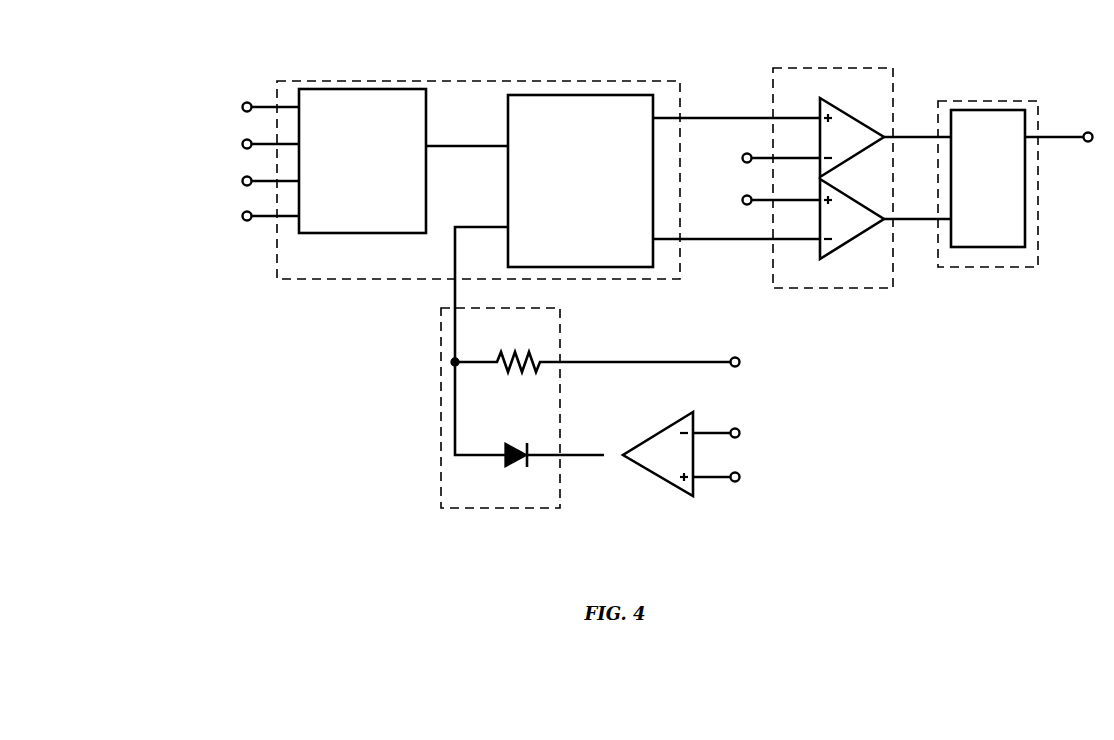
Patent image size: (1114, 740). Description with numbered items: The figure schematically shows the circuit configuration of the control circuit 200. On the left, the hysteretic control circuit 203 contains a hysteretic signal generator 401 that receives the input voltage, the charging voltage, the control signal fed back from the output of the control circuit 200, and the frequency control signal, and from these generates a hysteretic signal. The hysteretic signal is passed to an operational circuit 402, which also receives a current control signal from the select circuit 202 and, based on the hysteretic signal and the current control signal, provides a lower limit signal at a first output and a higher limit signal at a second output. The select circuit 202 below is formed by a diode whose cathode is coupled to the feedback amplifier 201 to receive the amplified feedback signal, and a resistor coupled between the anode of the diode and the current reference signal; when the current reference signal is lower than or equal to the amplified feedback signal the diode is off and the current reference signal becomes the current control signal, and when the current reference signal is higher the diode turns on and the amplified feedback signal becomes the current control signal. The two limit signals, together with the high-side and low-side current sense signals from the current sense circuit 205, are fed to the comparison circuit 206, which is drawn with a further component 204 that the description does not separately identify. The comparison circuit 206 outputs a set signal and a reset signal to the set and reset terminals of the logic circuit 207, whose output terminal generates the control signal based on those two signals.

The control circuit 200 is at (230, 57).
The feedback amplifier 201 is at (665, 479).
The select circuit 202 is at (437, 416).
The hysteretic control circuit 203 is at (538, 82).
The first comparator 204 is at (852, 115).
The current sense circuit 205 is at (848, 245).
The comparison circuit 206 is at (823, 68).
The logic circuit 207 is at (965, 100).
The hysteretic signal generator 401 is at (348, 234).
The operational circuit 402 is at (507, 200).